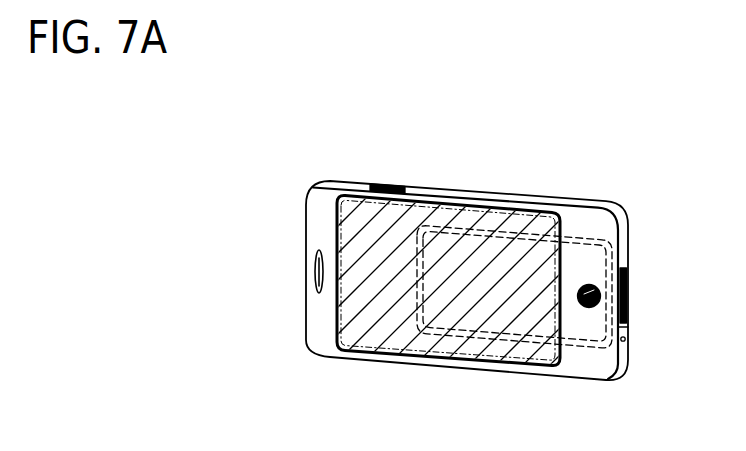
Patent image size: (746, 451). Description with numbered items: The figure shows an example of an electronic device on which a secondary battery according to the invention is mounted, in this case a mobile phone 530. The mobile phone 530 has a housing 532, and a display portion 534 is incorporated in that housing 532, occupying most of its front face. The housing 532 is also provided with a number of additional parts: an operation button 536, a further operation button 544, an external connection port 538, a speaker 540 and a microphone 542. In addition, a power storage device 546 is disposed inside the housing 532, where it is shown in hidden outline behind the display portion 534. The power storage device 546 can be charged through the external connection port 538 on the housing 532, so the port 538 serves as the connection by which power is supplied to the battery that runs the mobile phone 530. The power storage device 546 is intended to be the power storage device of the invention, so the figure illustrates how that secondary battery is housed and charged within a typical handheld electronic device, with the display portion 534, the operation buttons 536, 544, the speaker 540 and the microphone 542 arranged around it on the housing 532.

The mobile phone 530 is at (517, 160).
The housing 532 is at (585, 367).
The display portion 534 is at (350, 245).
The operation button 536 is at (393, 184).
The external connection port 538 is at (629, 292).
The speaker 540 is at (318, 281).
The microphone 542 is at (624, 342).
The operation button 544 is at (592, 288).
The power storage device 546 is at (580, 232).